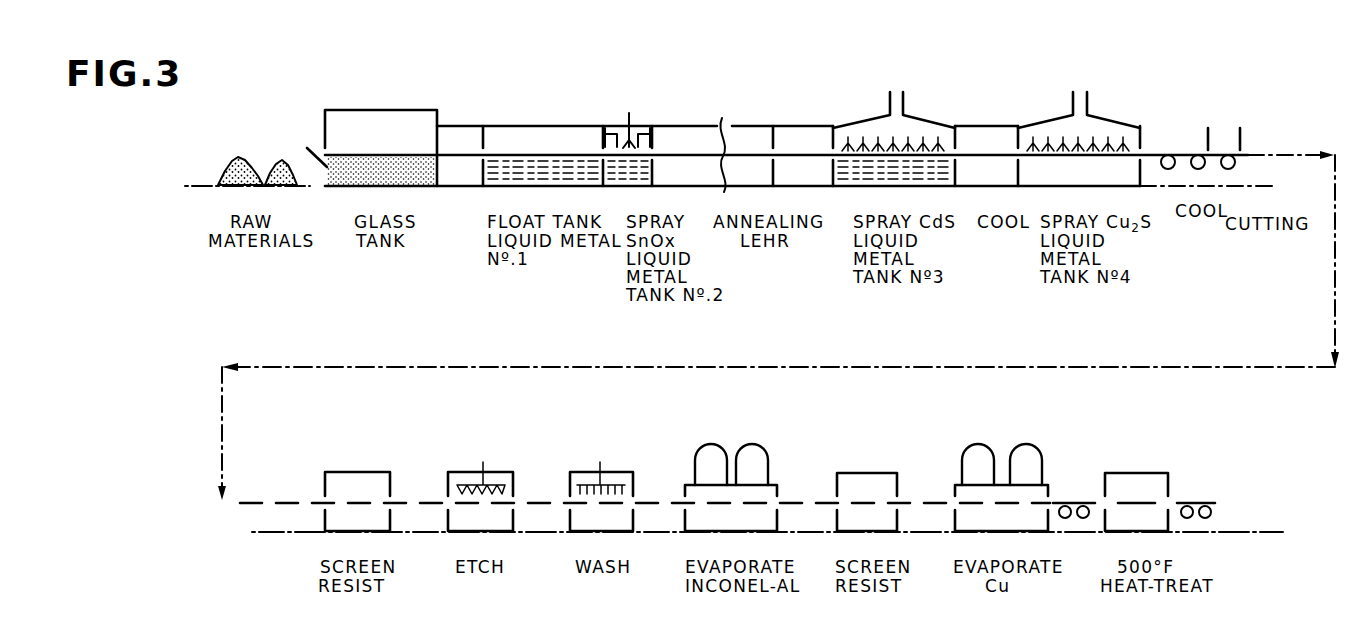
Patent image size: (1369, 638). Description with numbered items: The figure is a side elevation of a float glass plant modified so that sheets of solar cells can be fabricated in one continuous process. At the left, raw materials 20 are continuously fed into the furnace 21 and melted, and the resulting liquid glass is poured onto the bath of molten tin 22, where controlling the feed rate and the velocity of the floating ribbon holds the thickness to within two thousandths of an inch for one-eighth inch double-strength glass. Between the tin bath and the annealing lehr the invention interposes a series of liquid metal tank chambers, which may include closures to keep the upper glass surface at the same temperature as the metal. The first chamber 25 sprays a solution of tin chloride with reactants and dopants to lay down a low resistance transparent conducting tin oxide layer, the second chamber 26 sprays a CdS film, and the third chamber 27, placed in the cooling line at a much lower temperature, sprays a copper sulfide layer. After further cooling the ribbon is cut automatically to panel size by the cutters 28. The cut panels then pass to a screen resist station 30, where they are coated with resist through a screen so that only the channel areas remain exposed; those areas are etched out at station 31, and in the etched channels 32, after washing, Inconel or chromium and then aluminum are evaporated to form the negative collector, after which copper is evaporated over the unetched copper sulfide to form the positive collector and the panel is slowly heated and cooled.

The raw materials 20 is at (253, 157).
The furnace 21 is at (406, 113).
The bath of molten tin 22 is at (567, 135).
The first liquid metal tank chamber 25 is at (638, 133).
The second liquid metal tank chamber 26 is at (923, 123).
The third liquid metal tank chamber 27 is at (1112, 123).
The cutters 28 is at (1217, 138).
The screen resist station 30 is at (377, 471).
The etching station 31 is at (503, 478).
The etched channels 32 is at (610, 471).